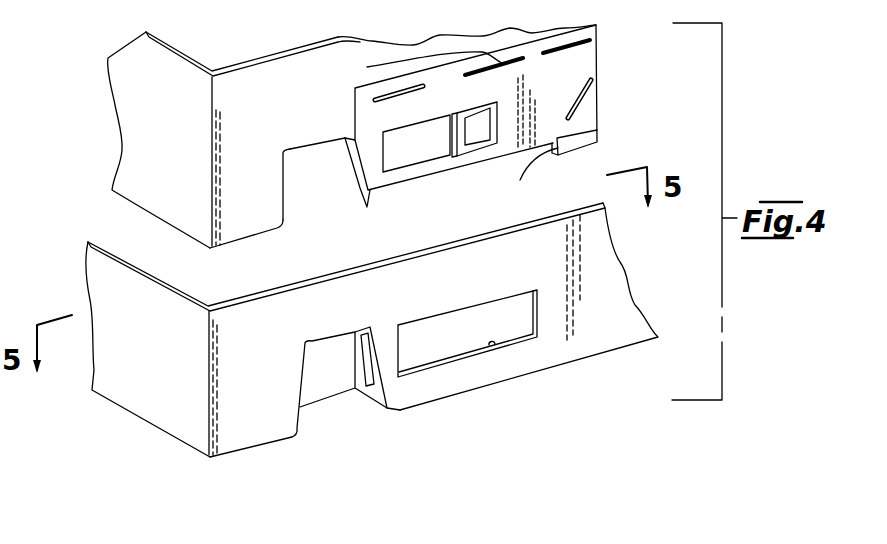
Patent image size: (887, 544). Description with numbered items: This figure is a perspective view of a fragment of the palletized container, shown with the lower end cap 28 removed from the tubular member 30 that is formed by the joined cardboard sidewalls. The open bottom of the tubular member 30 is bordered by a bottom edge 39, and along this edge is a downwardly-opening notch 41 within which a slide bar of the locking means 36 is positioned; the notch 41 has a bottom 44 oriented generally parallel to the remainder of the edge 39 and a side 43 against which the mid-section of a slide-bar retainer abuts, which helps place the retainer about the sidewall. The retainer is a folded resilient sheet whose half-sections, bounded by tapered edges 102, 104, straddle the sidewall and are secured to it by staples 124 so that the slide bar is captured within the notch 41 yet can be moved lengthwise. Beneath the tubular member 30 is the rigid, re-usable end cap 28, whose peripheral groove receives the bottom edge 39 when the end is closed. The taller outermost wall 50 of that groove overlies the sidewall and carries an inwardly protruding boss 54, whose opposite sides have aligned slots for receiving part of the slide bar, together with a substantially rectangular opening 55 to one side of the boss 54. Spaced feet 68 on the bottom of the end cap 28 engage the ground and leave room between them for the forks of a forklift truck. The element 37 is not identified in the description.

The end cap 28 is at (349, 341).
The tubular member 30 is at (328, 154).
The locking means 36 is at (492, 130).
The side flange of upper bracket 37 is at (138, 140).
The bottom edge 39 is at (252, 240).
The notch 41 is at (282, 212).
The notch side 43 is at (553, 150).
The notch bottom 44 is at (310, 160).
The outermost wall 50 is at (578, 337).
The boss 54 is at (325, 385).
The rectangular opening 55 is at (492, 345).
The feet 68 is at (270, 433).
The tapered edge 102 is at (362, 192).
The tapered edge 104 is at (348, 157).
The staples 124 is at (388, 93).